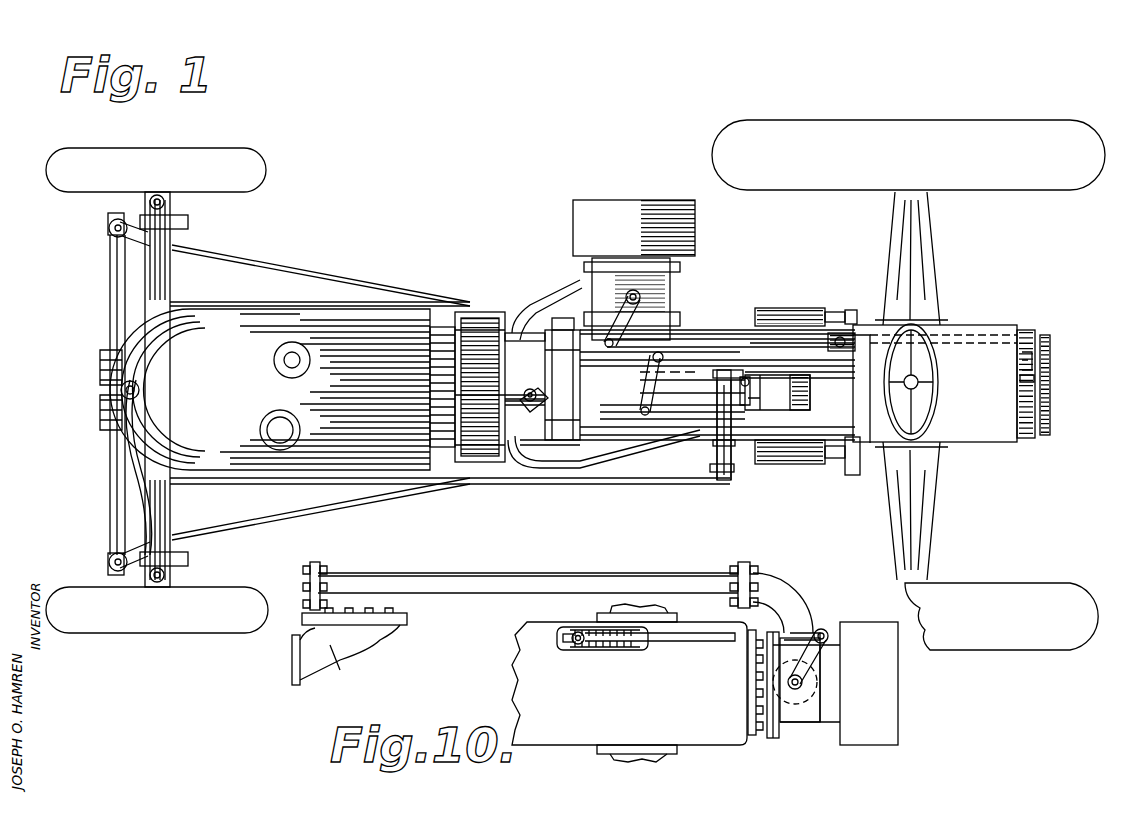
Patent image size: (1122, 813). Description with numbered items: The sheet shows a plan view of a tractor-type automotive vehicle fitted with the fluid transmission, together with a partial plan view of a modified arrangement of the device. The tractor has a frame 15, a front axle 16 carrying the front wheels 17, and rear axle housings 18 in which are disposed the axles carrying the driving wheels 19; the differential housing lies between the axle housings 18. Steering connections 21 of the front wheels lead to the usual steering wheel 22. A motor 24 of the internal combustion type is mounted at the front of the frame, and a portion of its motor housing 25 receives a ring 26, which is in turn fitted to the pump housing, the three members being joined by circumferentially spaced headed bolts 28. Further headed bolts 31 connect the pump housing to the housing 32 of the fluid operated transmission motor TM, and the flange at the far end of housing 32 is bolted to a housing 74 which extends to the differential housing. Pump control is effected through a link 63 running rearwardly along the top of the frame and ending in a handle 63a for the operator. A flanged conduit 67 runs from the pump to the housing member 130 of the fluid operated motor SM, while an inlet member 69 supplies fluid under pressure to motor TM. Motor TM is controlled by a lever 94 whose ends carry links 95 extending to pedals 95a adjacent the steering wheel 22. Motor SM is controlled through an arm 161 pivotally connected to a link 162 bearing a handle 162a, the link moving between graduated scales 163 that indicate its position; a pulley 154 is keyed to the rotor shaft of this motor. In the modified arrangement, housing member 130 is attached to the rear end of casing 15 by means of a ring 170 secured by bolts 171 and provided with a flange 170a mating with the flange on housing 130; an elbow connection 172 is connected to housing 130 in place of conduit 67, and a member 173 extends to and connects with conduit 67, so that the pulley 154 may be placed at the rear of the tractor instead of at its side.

In FIG. 1, the frame 15 is at (985, 420).
In FIG. 10, the frame 15 is at (560, 735).
In FIG. 1, the front axle 16 is at (170, 278).
In FIG. 1, the front wheels 17 is at (212, 186).
In FIG. 1, the rear axle housings 18 is at (930, 228).
In FIG. 10, the rear axle housings 18 is at (610, 611).
In FIG. 1, the driving wheels 19 is at (762, 184).
In FIG. 1, the steering connections 21 is at (138, 228).
In FIG. 1, the steering wheel 22 is at (936, 352).
In FIG. 1, the motor 24 is at (380, 306).
In FIG. 1, the motor housing 25 is at (442, 326).
In FIG. 1, the ring 26 is at (478, 318).
In FIG. 1, the headed bolts 28 is at (455, 468).
In FIG. 1, the headed bolts 31 is at (545, 458).
In FIG. 1, the housing 32 is at (600, 333).
In FIG. 10, the housing 32 is at (338, 672).
In FIG. 1, the link 63 is at (560, 400).
In FIG. 1, the handle 63a is at (868, 398).
In FIG. 1, the flanged conduit 67 is at (548, 304).
In FIG. 10, the flanged conduit 67 is at (295, 600).
In FIG. 1, the inlet member 69 is at (615, 466).
In FIG. 1, the housing 74 is at (735, 452).
In FIG. 1, the lever 94 is at (640, 398).
In FIG. 1, the links 95 is at (728, 340).
In FIG. 1, the pedals 95a is at (812, 386).
In FIG. 1, the housing member 130 is at (712, 262).
In FIG. 10, the housing member 130 is at (805, 718).
In FIG. 1, the pulley 154 is at (606, 208).
In FIG. 10, the pulley 154 is at (872, 732).
In FIG. 1, the arm 161 is at (628, 310).
In FIG. 10, the arm 161 is at (820, 660).
In FIG. 1, the link 162 is at (700, 338).
In FIG. 10, the link 162 is at (700, 648).
In FIG. 1, the handle 162a is at (810, 316).
In FIG. 1, the scales 163 is at (852, 350).
In FIG. 10, the scales 163 is at (605, 652).
In FIG. 1, the ring 170 is at (1030, 440).
In FIG. 10, the ring 170 is at (762, 735).
In FIG. 1, the flange 170a is at (1045, 437).
In FIG. 10, the flange 170a is at (780, 742).
In FIG. 1, the bolts 171 is at (1022, 368).
In FIG. 10, the elbow connection 172 is at (800, 602).
In FIG. 10, the member 173 is at (470, 592).